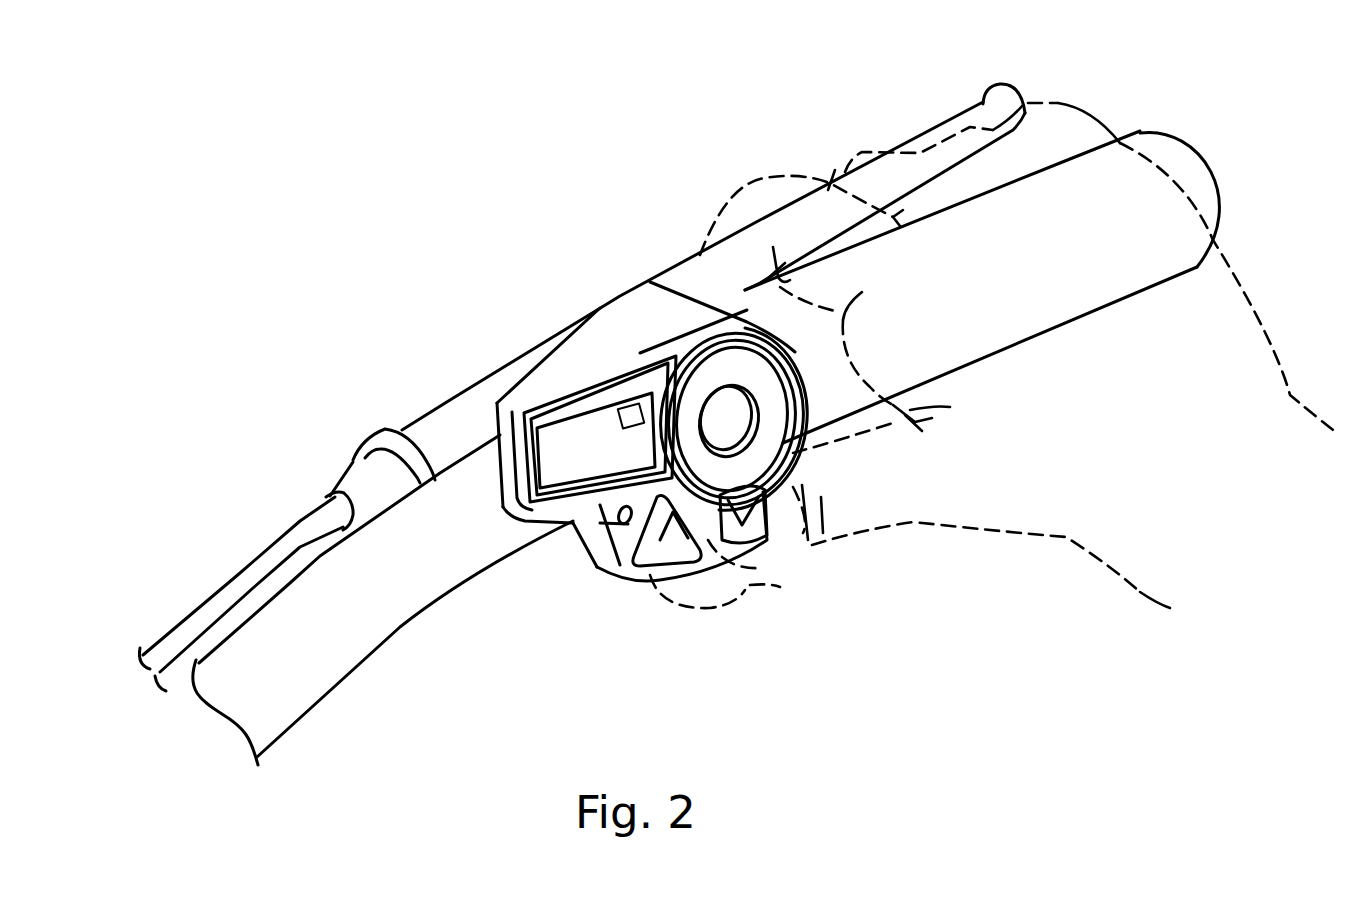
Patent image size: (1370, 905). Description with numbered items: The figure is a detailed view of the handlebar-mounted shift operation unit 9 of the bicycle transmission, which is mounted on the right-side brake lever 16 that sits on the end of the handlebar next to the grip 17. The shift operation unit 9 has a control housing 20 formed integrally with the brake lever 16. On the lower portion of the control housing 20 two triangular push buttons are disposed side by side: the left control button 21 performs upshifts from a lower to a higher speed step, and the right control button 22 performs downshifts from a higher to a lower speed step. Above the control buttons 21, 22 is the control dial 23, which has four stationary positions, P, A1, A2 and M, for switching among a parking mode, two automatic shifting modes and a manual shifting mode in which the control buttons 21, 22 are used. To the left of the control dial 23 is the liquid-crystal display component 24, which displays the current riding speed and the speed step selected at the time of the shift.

The shift operation unit 9 is at (650, 282).
The brake lever 16 is at (460, 417).
The grip 17 is at (1107, 170).
The control housing 20 is at (612, 332).
The control button 21 is at (600, 563).
The control button 22 is at (753, 540).
The control dial 23 is at (738, 336).
The liquid-crystal display component 24 is at (558, 428).